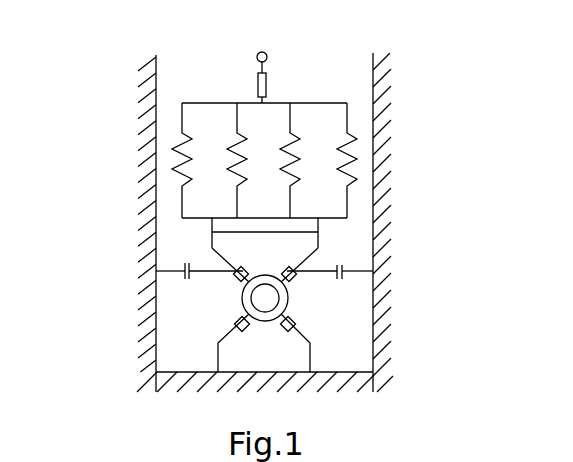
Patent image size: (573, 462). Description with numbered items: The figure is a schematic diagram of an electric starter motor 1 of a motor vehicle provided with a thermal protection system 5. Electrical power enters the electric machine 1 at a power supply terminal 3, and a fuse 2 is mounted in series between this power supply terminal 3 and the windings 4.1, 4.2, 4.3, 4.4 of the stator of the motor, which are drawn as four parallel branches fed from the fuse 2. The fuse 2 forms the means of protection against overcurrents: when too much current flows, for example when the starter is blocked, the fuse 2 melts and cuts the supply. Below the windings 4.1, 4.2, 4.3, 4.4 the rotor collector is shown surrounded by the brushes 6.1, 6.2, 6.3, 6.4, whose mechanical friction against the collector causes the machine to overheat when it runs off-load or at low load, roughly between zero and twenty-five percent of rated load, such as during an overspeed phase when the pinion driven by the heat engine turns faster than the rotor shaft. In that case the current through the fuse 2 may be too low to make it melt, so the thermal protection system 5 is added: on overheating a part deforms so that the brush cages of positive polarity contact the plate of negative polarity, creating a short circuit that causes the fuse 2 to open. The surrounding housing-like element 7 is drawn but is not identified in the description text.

The starter motor 1 is at (118, 176).
The fuse 2 is at (267, 85).
The power supply terminal 3 is at (268, 53).
The winding 4.1 is at (212, 140).
The winding 4.2 is at (251, 150).
The winding 4.3 is at (306, 150).
The winding 4.4 is at (360, 141).
The thermal protection system 5 is at (183, 284).
The brush 6.1 is at (246, 268).
The brush 6.2 is at (294, 266).
The brush 6.3 is at (247, 329).
The brush 6.4 is at (300, 319).
The housing 7 is at (154, 313).